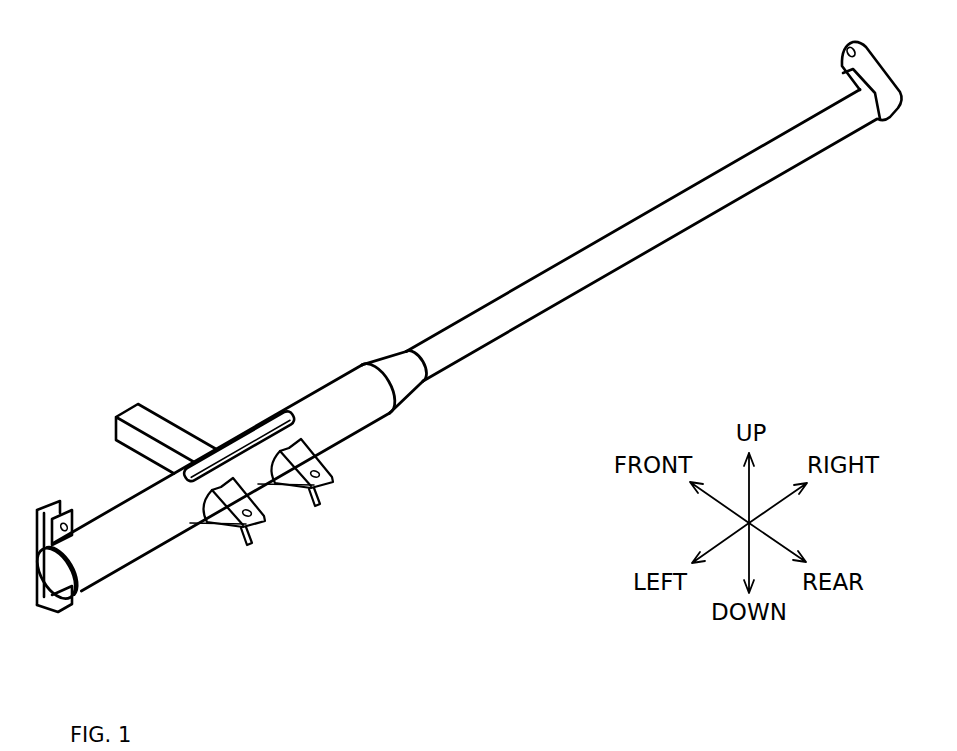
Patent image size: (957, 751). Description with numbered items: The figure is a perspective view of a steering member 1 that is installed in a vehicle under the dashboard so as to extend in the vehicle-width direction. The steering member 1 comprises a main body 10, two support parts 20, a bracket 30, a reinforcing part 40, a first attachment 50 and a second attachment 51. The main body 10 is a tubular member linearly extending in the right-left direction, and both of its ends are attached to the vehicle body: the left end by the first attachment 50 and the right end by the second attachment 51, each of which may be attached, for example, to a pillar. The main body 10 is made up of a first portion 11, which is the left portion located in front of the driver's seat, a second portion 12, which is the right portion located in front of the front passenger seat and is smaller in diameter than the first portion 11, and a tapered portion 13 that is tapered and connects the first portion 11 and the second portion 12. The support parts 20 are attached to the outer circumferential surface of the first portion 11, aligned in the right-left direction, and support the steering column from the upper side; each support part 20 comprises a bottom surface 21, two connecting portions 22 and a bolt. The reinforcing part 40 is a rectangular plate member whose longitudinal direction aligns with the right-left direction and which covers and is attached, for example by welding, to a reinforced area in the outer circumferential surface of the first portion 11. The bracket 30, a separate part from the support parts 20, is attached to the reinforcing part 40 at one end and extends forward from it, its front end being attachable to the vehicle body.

The steering member 1 is at (465, 330).
The main body 10 is at (453, 362).
The first portion 11 is at (131, 548).
The second portion 12 is at (678, 222).
The tapered portion 13 is at (398, 392).
The support part 20 is at (271, 539).
The bottom surface 21 is at (265, 528).
The connecting portion 22 is at (240, 526).
The bracket 30 is at (101, 412).
The reinforcing part 40 is at (273, 416).
The first attachment 50 is at (51, 508).
The second attachment 51 is at (846, 52).